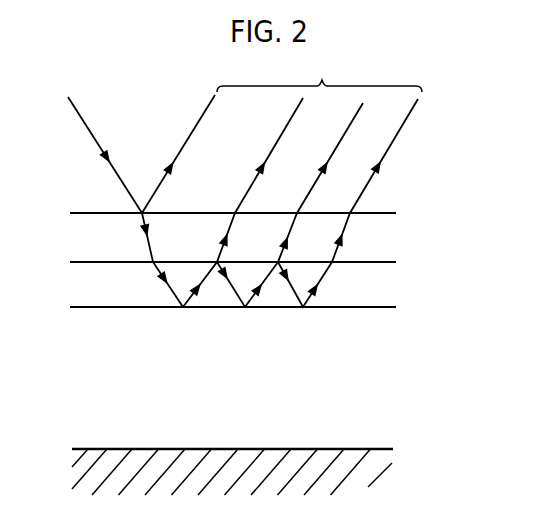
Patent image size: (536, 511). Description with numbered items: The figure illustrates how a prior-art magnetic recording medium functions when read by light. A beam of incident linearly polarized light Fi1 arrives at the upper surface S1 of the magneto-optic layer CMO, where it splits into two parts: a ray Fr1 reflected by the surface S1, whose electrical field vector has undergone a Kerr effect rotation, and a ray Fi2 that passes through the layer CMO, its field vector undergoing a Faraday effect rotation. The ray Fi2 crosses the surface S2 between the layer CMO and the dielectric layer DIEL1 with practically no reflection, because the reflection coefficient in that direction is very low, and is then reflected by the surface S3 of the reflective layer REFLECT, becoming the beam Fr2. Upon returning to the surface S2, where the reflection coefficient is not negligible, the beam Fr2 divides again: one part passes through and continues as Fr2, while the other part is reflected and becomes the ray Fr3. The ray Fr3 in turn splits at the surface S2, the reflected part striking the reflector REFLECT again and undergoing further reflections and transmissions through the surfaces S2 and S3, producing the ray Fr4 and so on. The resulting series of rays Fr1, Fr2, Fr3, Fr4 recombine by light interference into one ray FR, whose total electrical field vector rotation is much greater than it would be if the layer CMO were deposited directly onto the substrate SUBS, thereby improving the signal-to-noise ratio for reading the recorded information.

The surface of the layer CMO S1 is at (217, 214).
The surface between CMO and DIEL1 S2 is at (217, 262).
The surface of the reflective layer S3 is at (217, 307).
The incident beam Fi1 is at (98, 155).
The reflected ray Fr1 is at (178, 154).
The transmitted ray Fi2 is at (155, 260).
The reflected beam Fr2 is at (243, 205).
The reflected ray Fr3 is at (290, 207).
The reflected ray Fr4 is at (348, 205).
The recombined ray FR is at (319, 73).
The magneto-optic layer CMO is at (449, 238).
The dielectric layer DIEL1 is at (456, 287).
The reflective layer REFLECT is at (472, 373).
The substrate SUBS is at (273, 472).